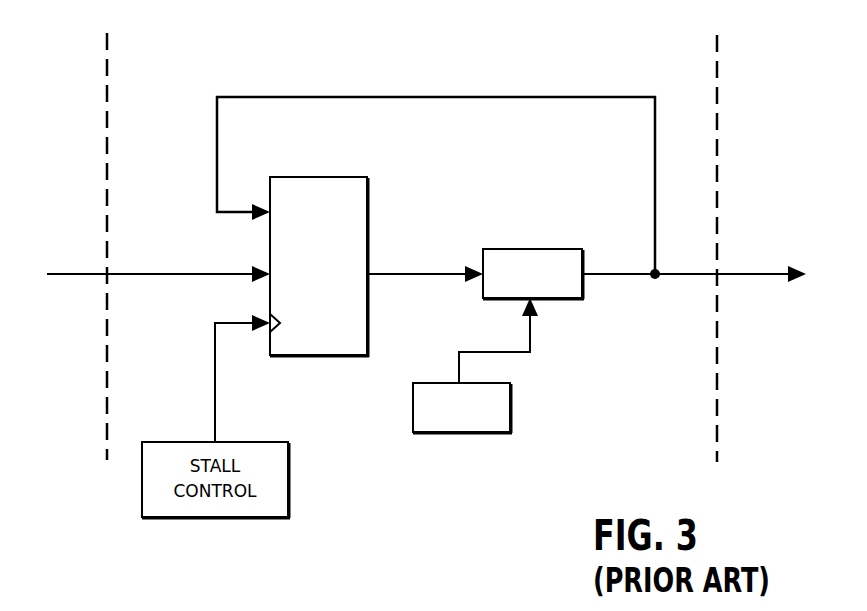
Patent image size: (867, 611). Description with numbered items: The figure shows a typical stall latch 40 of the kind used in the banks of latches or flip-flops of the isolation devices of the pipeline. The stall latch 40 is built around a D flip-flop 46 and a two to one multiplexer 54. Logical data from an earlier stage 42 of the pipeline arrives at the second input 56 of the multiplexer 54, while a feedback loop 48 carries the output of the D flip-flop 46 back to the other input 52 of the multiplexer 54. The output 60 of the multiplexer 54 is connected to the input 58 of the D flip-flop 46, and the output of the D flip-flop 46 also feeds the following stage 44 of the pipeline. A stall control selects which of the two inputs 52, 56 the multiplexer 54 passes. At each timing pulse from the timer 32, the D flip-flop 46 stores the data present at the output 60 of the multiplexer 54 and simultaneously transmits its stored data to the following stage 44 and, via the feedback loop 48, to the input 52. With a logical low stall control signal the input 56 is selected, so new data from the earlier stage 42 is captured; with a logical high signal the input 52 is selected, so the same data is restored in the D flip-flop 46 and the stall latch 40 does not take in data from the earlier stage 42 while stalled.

The timer 32 is at (511, 408).
The stall latch 40 is at (242, 46).
The earlier stage 42 is at (82, 286).
The following stage 44 is at (740, 287).
The D flip-flop 46 is at (538, 249).
The feedback loop 48 is at (475, 97).
The input of the multiplexer 52 is at (270, 203).
The 2 to 1 multiplexer 54 is at (319, 267).
The second input of the multiplexer 56 is at (270, 262).
The input of the D flip-flop 58 is at (483, 265).
The output of the multiplexer 60 is at (368, 283).